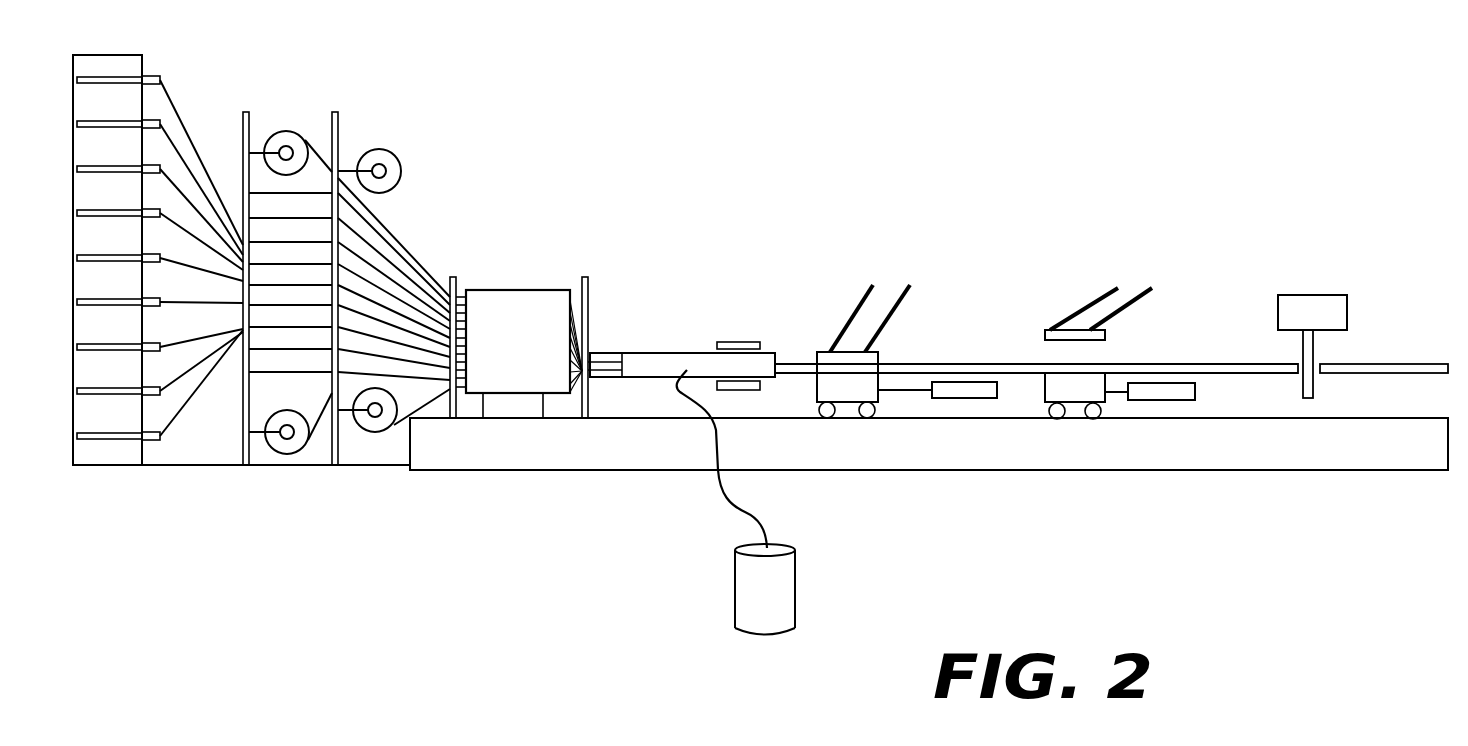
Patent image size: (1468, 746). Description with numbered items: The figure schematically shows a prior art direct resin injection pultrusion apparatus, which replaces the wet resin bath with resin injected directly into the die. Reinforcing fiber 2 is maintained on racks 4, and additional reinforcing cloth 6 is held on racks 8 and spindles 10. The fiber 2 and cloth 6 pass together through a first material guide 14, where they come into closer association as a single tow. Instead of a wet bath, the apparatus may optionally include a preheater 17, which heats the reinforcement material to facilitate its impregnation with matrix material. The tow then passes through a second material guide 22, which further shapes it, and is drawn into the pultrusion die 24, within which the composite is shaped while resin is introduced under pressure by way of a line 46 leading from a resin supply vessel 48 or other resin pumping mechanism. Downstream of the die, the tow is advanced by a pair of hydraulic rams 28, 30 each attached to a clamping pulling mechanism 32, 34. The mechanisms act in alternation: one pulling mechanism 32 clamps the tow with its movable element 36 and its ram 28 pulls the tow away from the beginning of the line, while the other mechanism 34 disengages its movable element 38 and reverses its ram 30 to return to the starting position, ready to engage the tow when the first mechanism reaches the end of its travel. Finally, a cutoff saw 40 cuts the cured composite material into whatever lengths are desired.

The fiber 2 is at (180, 104).
The racks 4 is at (118, 54).
The cloth 6 is at (396, 225).
The racks 8 is at (340, 163).
The spindles 10 is at (286, 131).
The first material guide 14 is at (455, 278).
The preheater 17 is at (508, 320).
The second material guide 22 is at (590, 283).
The pultrusion die 24 is at (655, 354).
The hydraulic ram 28 is at (963, 398).
The hydraulic ram 30 is at (1175, 400).
The clamping pulling mechanism 32 is at (879, 397).
The clamping pulling mechanism 34 is at (1098, 396).
The movable element 36 is at (818, 352).
The movable element 38 is at (1050, 330).
The cutoff saw 40 is at (1302, 295).
The line 46 is at (775, 522).
The container 48 is at (785, 600).